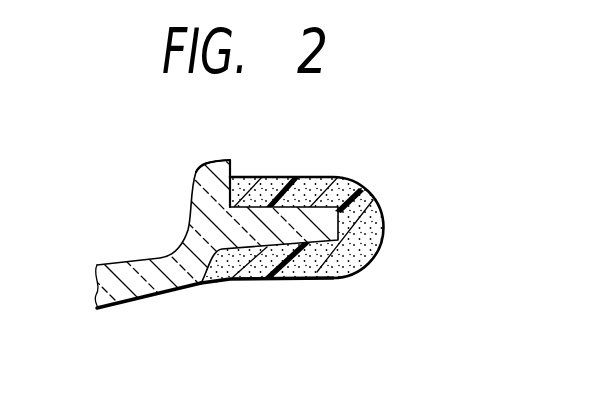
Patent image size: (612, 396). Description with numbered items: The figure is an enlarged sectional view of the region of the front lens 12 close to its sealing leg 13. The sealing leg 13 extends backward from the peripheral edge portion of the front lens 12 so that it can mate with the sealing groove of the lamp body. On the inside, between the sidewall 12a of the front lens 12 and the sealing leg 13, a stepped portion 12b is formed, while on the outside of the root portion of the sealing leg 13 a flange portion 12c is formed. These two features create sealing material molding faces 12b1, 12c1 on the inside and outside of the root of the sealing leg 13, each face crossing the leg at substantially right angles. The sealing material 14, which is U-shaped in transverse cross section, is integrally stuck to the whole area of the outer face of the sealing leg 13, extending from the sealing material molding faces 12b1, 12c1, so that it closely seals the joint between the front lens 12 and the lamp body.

The front lens 12 is at (220, 198).
The sidewall 12a is at (128, 258).
The stepped portion 12b is at (196, 288).
The sealing material molding face 12b1 is at (220, 283).
The flange portion 12c is at (227, 158).
The sealing material molding face 12c1 is at (240, 176).
The sealing leg 13 is at (338, 206).
The sealing material 14 is at (375, 201).